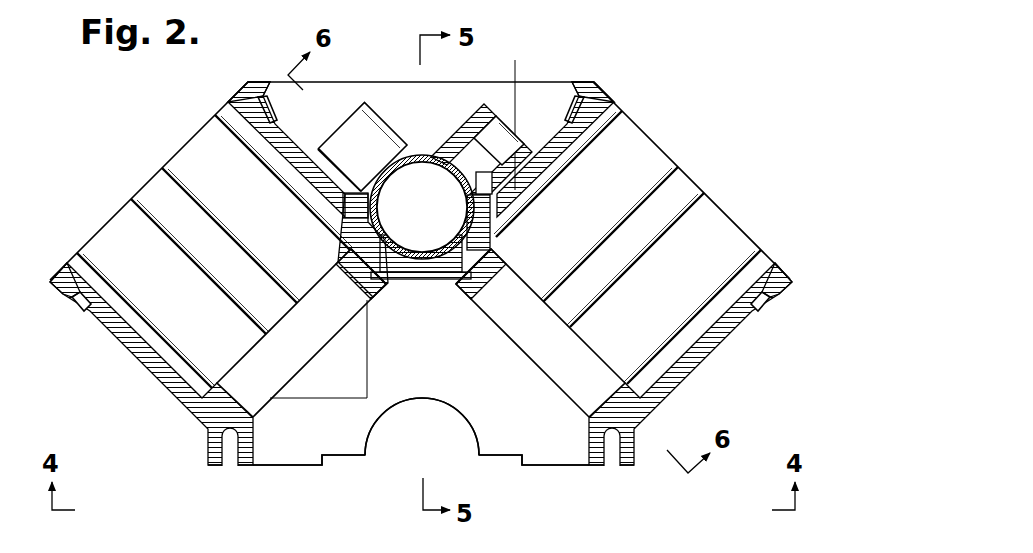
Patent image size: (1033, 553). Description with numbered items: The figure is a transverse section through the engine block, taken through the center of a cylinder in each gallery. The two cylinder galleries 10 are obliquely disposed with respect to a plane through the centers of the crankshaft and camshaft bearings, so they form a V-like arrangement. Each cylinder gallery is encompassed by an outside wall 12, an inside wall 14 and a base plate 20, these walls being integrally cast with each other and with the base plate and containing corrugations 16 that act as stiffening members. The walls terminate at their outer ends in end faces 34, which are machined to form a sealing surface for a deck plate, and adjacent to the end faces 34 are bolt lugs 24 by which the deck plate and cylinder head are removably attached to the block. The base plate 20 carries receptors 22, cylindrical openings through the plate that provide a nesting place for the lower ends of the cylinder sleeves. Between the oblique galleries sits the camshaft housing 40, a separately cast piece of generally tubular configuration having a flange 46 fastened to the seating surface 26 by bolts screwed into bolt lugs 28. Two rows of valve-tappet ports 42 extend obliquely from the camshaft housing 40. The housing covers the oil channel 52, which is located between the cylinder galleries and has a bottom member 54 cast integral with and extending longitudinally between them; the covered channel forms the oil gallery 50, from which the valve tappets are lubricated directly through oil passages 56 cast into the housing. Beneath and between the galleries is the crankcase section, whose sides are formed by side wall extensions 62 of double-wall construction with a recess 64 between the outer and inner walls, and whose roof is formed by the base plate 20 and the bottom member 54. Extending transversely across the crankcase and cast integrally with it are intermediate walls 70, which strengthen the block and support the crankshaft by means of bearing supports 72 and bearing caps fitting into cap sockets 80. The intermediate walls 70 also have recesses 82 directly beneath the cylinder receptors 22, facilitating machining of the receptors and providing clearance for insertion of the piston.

The cylinder gallery 10 is at (118, 340).
The outside wall 12 is at (152, 356).
The inside wall 14 is at (292, 146).
The corrugations 16 is at (666, 178).
The base plate 20 is at (374, 282).
The receptors 22 is at (370, 300).
The bolt lugs 24 is at (82, 301).
The seating surface 26 is at (522, 167).
The bolt lugs 28 is at (374, 217).
The end faces 34 is at (64, 277).
The camshaft housing 40 is at (424, 156).
The valve-tappet ports 42 is at (337, 130).
The flange 46 is at (344, 197).
The oil gallery 50 is at (542, 259).
The oil channel 52 is at (351, 247).
The bottom member 54 is at (420, 280).
The oil passages 56 is at (485, 182).
The side wall extensions 62 is at (210, 463).
The recess 64 is at (232, 455).
The intermediate walls 70 is at (553, 457).
The bearing supports 72 is at (474, 418).
The cap sockets 80 is at (341, 462).
The recesses 82 is at (352, 370).